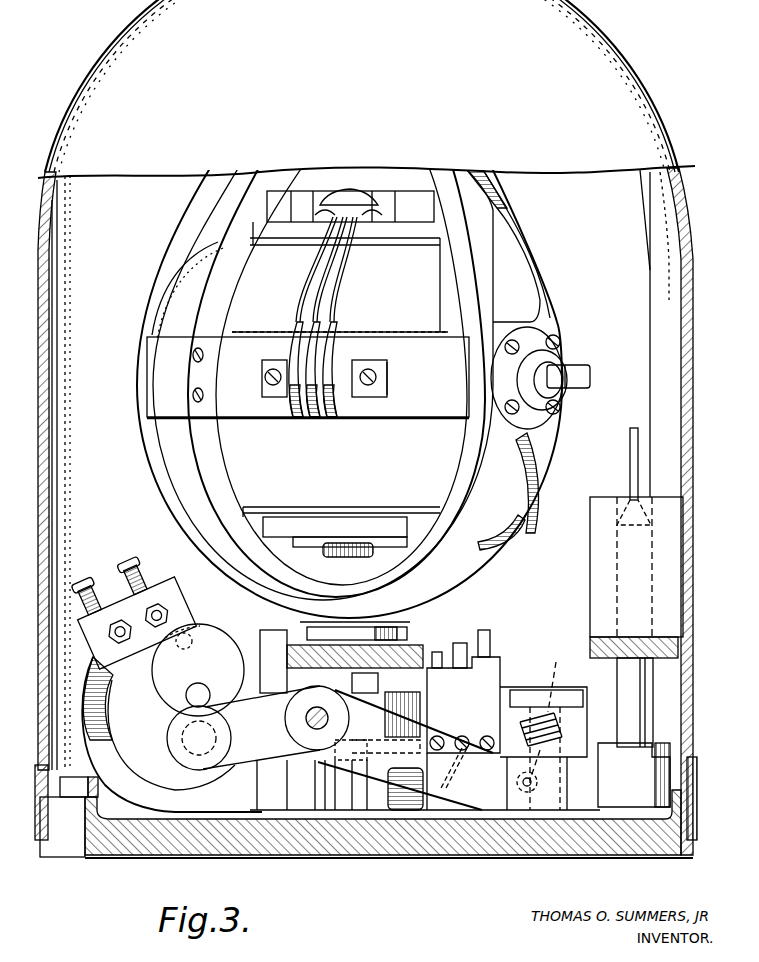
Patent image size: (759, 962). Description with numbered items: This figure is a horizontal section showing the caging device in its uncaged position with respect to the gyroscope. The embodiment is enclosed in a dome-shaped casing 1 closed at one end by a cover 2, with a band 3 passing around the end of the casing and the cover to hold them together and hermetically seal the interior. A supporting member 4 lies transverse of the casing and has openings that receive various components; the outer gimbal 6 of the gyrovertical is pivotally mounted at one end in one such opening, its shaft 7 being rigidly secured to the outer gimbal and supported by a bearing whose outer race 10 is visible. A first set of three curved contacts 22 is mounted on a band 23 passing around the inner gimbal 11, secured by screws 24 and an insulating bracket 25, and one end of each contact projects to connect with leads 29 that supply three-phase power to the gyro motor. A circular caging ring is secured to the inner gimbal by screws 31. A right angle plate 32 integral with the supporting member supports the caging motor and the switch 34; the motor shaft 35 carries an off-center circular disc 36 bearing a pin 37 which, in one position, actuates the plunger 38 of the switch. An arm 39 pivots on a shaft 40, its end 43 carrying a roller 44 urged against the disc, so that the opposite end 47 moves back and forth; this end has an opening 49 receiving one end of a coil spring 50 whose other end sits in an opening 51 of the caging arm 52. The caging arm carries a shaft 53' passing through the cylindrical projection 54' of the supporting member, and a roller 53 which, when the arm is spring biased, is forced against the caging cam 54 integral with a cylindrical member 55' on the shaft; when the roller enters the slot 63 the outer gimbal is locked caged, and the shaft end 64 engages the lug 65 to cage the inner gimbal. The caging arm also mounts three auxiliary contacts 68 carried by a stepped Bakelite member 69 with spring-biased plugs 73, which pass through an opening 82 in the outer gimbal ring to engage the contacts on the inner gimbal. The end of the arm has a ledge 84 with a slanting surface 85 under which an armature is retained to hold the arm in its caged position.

The casing 1 is at (690, 590).
The cover 2 is at (490, 845).
The band 3 is at (698, 806).
The supporting member 4 is at (410, 650).
The outer gimbal 6 is at (524, 300).
The shaft 7 is at (345, 640).
The outer race 10 is at (324, 640).
The inner gimbal 11 is at (340, 373).
The contacts 22 is at (348, 352).
The band 23 is at (440, 414).
The screws 24 is at (263, 378).
The bracket 25 is at (388, 386).
The leads 29 is at (306, 290).
The screws 31 is at (194, 393).
The right angle plate 32 is at (274, 656).
The switch 34 is at (178, 608).
The shaft 35 is at (193, 690).
The circular disc 36 is at (198, 670).
The pin 37 is at (192, 648).
The plunger 38 is at (192, 627).
The arm 39 is at (360, 768).
The shaft 40 is at (300, 718).
The end of arm 43 is at (225, 762).
The roller 44 is at (216, 738).
The end of arm 47 is at (580, 712).
The opening 49 is at (547, 713).
The coil spring 50 is at (217, 457).
The opening 51 is at (516, 782).
The caging arm 52 is at (674, 757).
The roller 53 is at (405, 822).
The shaft 53' is at (675, 702).
The caging cam 54 is at (386, 713).
The cylindrical projection 54' is at (618, 577).
The cylindrical member 55' is at (352, 818).
The slot 63 is at (408, 697).
The end of shaft 64 is at (630, 462).
The lug 65 is at (575, 366).
The auxiliary contacts 68 is at (485, 630).
The stepped Bakelite member 69 is at (505, 660).
The plug 73 is at (447, 652).
The opening 82 is at (492, 556).
The ledge 84 is at (575, 690).
The slanting surface 85 is at (512, 704).